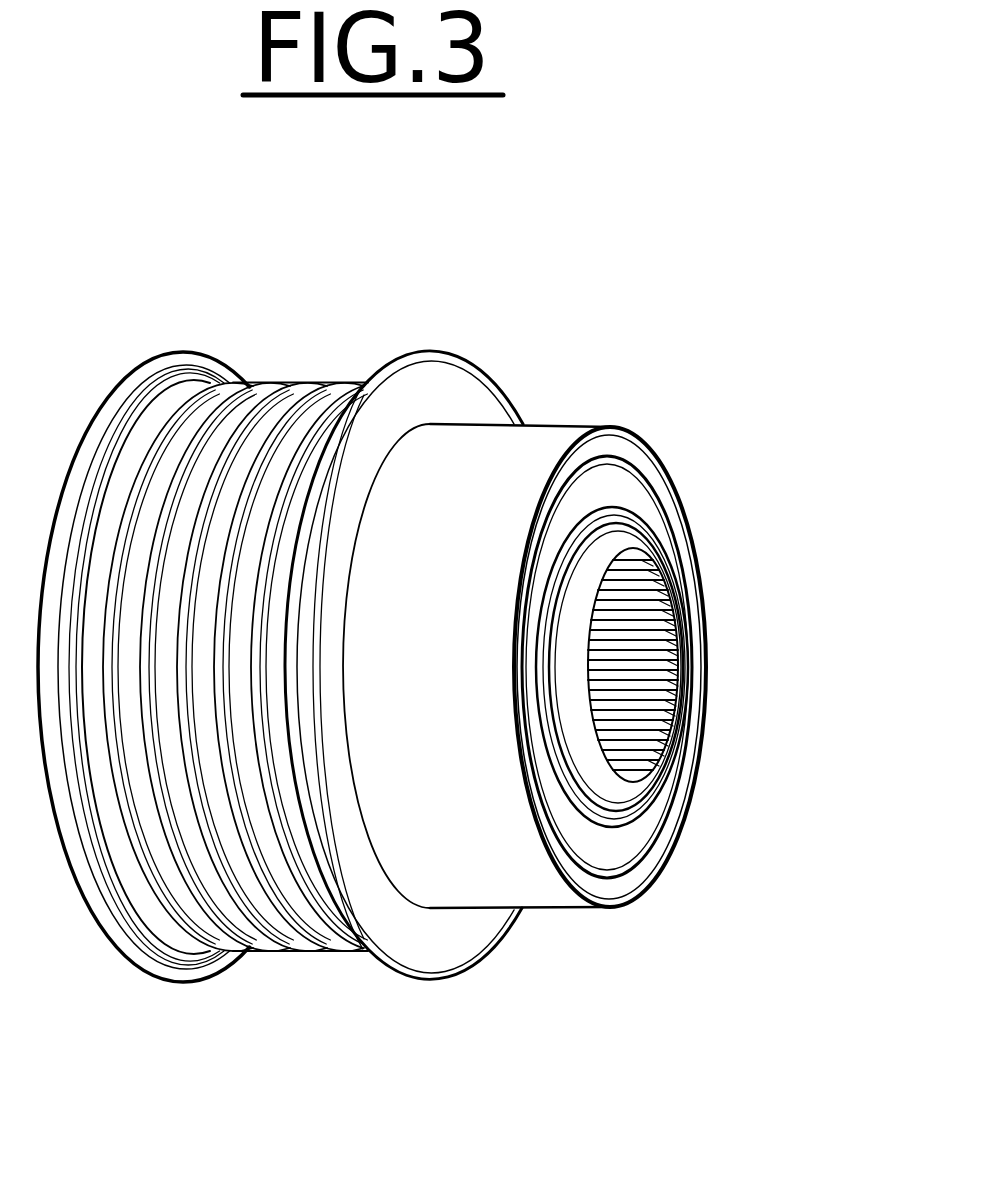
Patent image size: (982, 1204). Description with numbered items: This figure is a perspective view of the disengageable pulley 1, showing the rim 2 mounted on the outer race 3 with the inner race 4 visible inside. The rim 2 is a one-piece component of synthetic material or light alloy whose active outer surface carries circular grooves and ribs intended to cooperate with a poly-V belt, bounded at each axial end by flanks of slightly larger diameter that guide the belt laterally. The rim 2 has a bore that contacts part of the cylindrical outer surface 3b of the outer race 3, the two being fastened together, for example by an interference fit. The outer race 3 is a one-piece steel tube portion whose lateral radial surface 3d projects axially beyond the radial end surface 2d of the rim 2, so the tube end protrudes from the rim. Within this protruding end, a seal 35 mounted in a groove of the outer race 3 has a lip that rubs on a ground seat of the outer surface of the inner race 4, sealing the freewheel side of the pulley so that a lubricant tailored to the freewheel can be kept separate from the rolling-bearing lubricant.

The disengageable pulley 1 is at (682, 378).
The rim 2 is at (408, 352).
The radial end surface 2d is at (437, 388).
The outer race 3 is at (637, 437).
The cylindrical outer surface 3b is at (517, 427).
The lateral radial surface 3d is at (633, 433).
The seal 35 is at (620, 492).
The inner race 4 is at (633, 545).